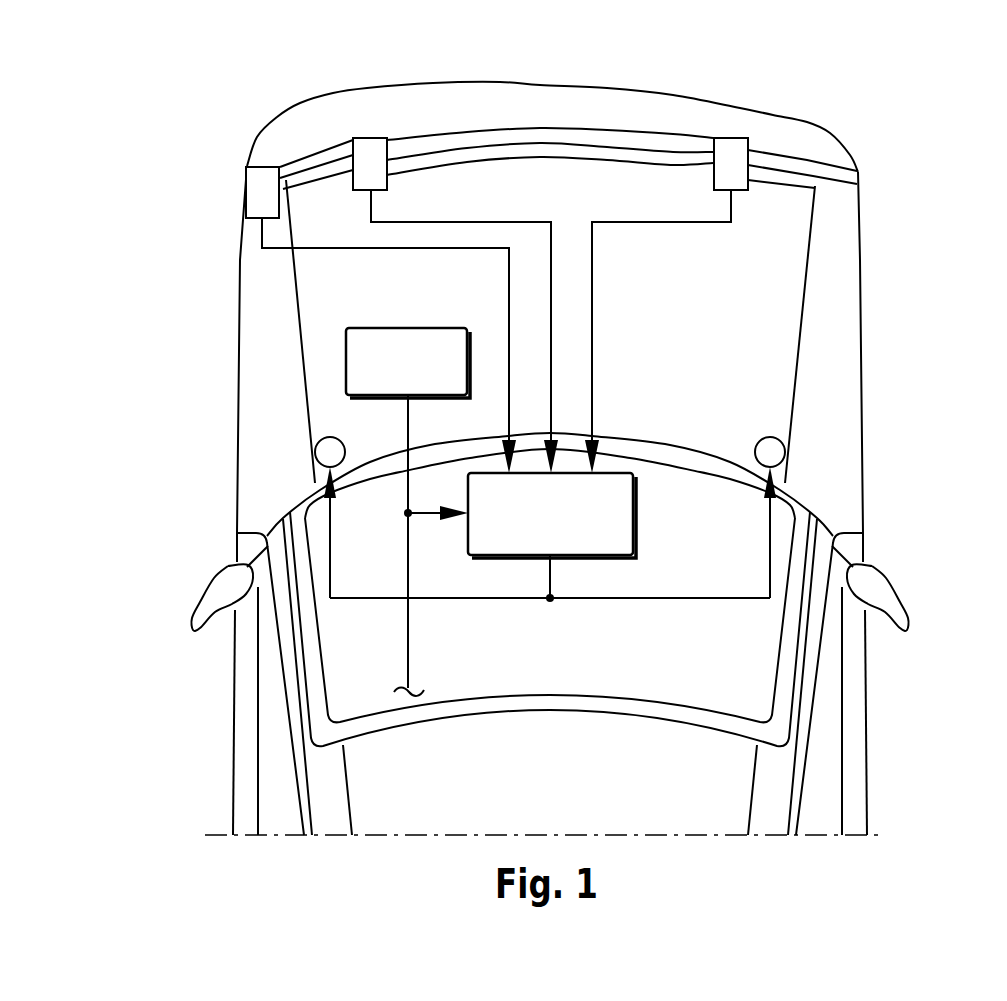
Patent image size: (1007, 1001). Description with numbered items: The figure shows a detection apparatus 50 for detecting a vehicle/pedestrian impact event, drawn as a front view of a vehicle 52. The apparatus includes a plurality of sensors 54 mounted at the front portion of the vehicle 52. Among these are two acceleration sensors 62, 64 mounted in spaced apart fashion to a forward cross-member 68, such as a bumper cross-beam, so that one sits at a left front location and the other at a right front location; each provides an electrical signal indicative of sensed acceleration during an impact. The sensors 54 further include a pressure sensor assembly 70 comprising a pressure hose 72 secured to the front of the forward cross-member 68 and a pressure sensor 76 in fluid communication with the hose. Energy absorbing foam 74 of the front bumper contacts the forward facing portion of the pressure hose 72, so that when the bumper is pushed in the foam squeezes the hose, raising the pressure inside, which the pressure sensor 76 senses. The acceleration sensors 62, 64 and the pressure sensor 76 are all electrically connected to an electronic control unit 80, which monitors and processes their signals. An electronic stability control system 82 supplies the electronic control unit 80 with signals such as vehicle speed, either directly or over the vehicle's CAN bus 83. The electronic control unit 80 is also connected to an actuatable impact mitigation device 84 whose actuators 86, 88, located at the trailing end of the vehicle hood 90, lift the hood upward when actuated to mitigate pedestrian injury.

The detection apparatus 50 is at (893, 158).
The vehicle 52 is at (866, 363).
The sensors 54 is at (649, 58).
The acceleration sensor 62 is at (378, 138).
The acceleration sensor 64 is at (735, 137).
The forward cross-member 68 is at (552, 158).
The pressure sensor assembly 70 is at (300, 125).
The pressure hose 72 is at (472, 145).
The energy absorbing foam 74 is at (678, 117).
The pressure sensor 76 is at (267, 196).
The electronic control unit 80 is at (635, 521).
The electronic stability control system 82 is at (392, 328).
The CAN bus 83 is at (408, 426).
The actuatable vehicle/pedestrian impact mitigation device 84 is at (210, 346).
The actuator 86 is at (323, 450).
The actuator 88 is at (778, 447).
The vehicle hood 90 is at (767, 287).